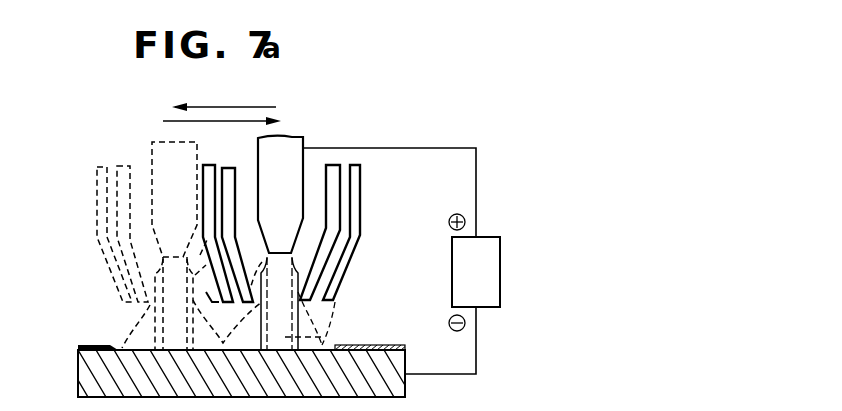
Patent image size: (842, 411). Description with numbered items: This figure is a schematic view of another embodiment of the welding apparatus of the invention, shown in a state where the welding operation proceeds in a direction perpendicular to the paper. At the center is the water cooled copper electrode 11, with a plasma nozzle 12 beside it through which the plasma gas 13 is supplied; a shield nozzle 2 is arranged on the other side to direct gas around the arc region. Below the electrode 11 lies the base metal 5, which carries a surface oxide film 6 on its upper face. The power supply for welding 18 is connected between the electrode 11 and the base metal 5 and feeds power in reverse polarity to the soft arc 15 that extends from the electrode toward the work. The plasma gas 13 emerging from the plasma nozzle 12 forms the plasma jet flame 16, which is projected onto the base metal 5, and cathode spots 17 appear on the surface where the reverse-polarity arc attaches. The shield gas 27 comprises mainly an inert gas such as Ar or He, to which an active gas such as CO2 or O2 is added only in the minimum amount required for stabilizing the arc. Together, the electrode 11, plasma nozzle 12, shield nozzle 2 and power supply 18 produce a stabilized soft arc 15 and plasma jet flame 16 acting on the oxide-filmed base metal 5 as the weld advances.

The shield nozzle 2 is at (360, 177).
The base metal 5 is at (405, 362).
The surface oxide film 6 is at (383, 350).
The water cooled copper electrode 11 is at (288, 157).
The plasma nozzle 12 is at (330, 173).
The plasma gas 13 is at (245, 172).
The soft arc 15 is at (308, 317).
The plasma jet flame 16 is at (300, 330).
The cathode spots 17 is at (323, 348).
The power supply for welding 18 is at (500, 278).
The shield gas 27 is at (218, 170).